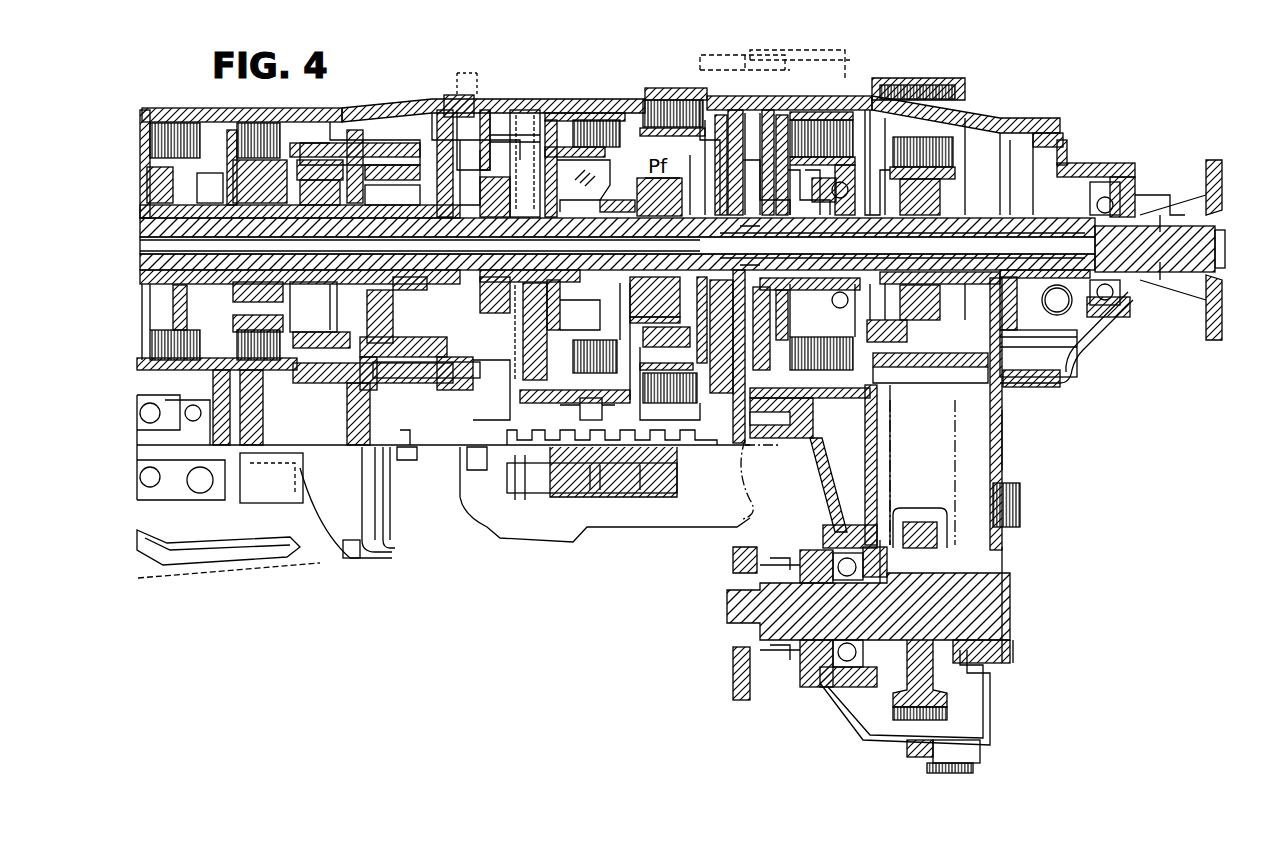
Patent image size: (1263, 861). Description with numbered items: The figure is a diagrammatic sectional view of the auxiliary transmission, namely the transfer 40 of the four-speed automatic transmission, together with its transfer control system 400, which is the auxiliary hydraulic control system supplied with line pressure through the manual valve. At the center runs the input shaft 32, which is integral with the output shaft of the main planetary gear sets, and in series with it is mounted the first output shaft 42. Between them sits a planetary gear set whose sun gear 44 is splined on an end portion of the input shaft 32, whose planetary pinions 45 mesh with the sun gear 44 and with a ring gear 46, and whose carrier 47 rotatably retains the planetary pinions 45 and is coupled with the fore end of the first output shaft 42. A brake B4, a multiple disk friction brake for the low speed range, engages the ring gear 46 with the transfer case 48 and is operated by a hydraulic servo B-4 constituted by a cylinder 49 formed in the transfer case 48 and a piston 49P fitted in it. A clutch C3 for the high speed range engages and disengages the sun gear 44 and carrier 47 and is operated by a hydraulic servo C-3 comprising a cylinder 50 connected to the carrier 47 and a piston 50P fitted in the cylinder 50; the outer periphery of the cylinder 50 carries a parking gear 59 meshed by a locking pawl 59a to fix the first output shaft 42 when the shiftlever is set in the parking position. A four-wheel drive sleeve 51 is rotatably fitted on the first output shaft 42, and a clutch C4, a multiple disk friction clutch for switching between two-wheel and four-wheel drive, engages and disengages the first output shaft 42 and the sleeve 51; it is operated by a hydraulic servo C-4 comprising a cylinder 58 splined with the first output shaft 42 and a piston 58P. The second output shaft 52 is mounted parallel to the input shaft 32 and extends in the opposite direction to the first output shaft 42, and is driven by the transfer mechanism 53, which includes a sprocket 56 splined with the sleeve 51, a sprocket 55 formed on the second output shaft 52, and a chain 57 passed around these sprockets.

The input shaft 32 is at (460, 288).
The transfer 40 is at (506, 98).
The first output shaft 42 is at (1222, 262).
The sun gear 44 is at (627, 362).
The planetary pinions 45 is at (638, 380).
The ring gear 46 is at (670, 357).
The carrier 47 is at (746, 442).
The transfer case 48 is at (1068, 141).
The cylinder 49 is at (745, 115).
The piston 49P is at (703, 100).
The cylinder 50 is at (446, 101).
The piston 50P is at (557, 107).
The 4-wheel drive sleeve 51 is at (1003, 347).
The second output shaft 52 is at (953, 633).
The transfer mechanism 53 is at (975, 140).
The sprocket 55 is at (920, 553).
The sprocket 56 is at (923, 327).
The chain 57 is at (1003, 453).
The cylinder 58 is at (770, 100).
The piston 58P is at (793, 107).
The parking gear 59 is at (612, 365).
The locking pawl 59a is at (625, 372).
The transfer control system 400 is at (577, 505).
The brake B4 is at (663, 100).
The hydraulic servo B-4 is at (722, 125).
The clutch C3 is at (593, 110).
The hydraulic servo C-3 is at (527, 108).
The clutch C4 is at (850, 103).
The hydraulic servo C-4 is at (753, 110).